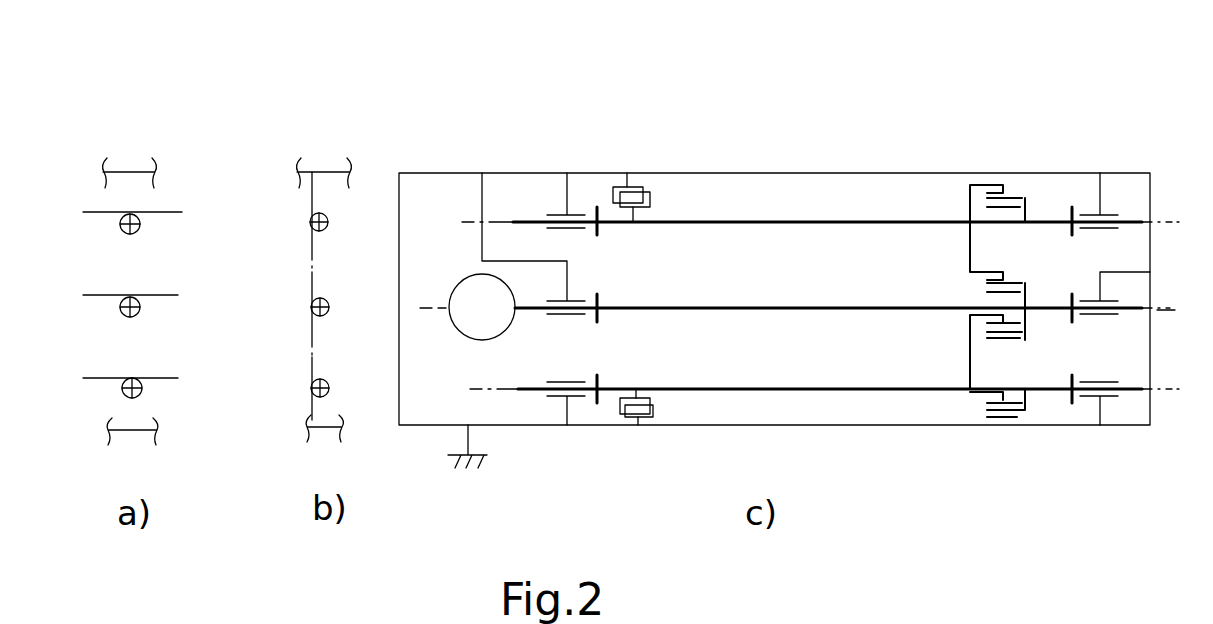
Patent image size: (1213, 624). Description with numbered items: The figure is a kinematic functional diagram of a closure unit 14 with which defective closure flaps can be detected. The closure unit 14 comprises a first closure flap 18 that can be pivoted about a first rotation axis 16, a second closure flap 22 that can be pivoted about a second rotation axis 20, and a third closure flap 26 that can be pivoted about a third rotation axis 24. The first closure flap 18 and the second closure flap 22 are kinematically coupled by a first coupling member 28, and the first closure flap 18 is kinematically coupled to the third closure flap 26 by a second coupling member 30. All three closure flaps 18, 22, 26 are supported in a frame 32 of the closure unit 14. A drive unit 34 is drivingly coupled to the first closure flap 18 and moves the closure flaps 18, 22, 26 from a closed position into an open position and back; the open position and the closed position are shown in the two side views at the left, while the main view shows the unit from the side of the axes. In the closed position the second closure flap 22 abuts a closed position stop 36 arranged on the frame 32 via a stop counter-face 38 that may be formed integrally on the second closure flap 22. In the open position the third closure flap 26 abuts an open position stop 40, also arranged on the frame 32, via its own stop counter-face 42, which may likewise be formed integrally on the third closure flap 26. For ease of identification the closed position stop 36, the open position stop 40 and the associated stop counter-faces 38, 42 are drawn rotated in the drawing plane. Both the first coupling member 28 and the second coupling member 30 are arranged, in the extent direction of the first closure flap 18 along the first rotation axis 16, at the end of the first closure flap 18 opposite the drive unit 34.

The closure unit 14 is at (1055, 71).
The first rotation axis 16 is at (1165, 312).
The first closure flap 18 is at (827, 307).
The second rotation axis 20 is at (1158, 222).
The second closure flap 22 is at (797, 222).
The third rotation axis 24 is at (1168, 392).
The third closure flap 26 is at (855, 389).
The first coupling member 28 is at (970, 198).
The second coupling member 30 is at (970, 392).
The frame 32 is at (127, 170).
The drive unit 34 is at (453, 308).
The closed position stop 36 is at (643, 190).
The stop counter-face 38 is at (650, 203).
The open position stop 40 is at (655, 413).
The stop counter-face 42 is at (622, 411).